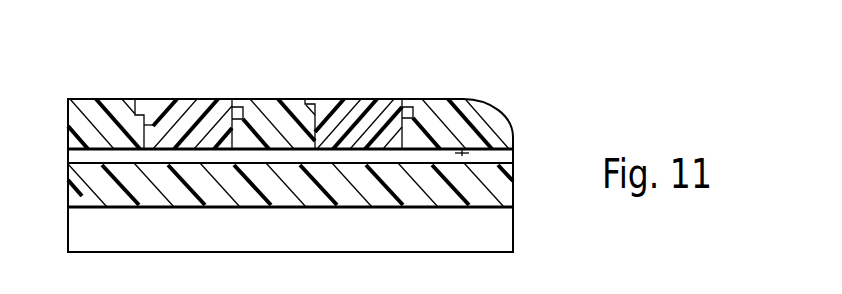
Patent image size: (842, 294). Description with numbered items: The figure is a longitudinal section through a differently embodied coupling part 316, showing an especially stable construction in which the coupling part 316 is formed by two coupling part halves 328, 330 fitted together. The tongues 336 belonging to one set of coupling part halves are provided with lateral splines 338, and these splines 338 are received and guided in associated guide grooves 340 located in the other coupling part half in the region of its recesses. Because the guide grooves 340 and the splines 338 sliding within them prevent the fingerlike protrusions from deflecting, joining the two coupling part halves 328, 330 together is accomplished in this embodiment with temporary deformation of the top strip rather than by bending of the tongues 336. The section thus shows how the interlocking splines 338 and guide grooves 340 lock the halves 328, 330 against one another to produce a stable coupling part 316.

The coupling part 316 is at (490, 86).
The coupling part half 328 is at (348, 99).
The coupling part half 330 is at (88, 107).
The tongues 336 is at (192, 105).
The lateral splines 338 is at (144, 103).
The guide grooves 340 is at (143, 116).